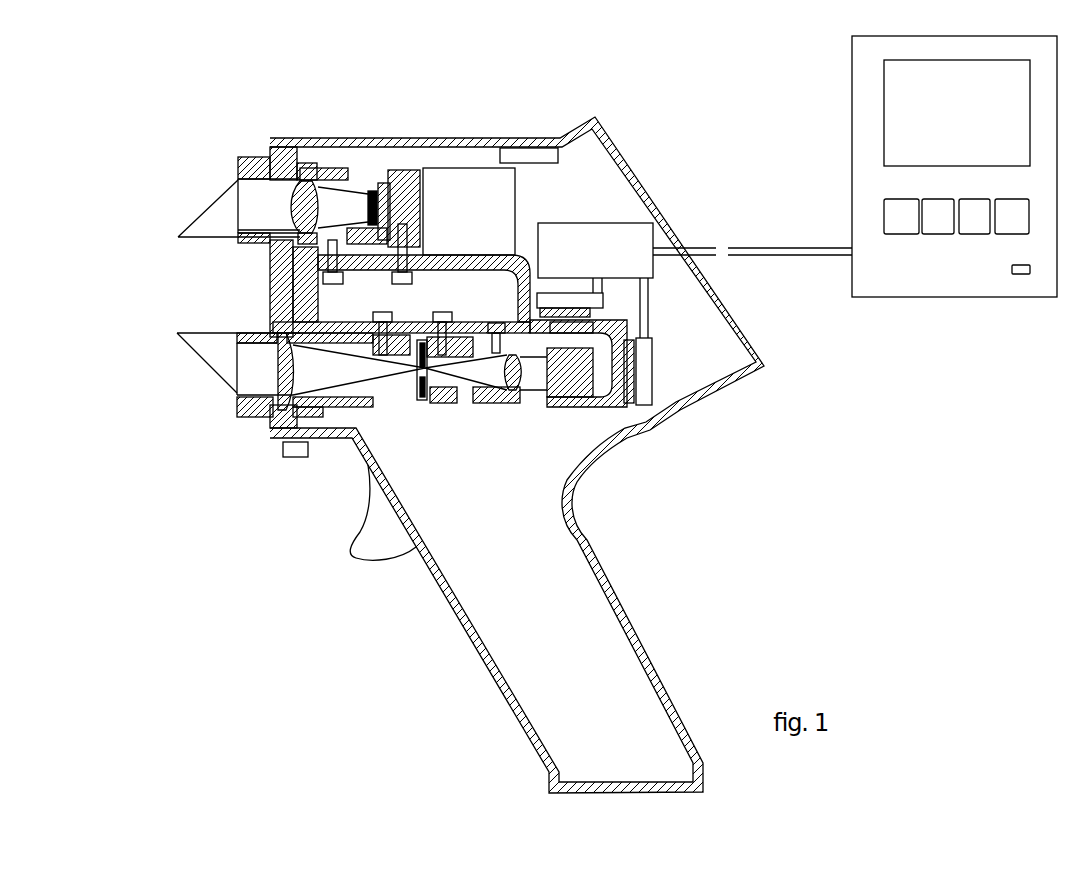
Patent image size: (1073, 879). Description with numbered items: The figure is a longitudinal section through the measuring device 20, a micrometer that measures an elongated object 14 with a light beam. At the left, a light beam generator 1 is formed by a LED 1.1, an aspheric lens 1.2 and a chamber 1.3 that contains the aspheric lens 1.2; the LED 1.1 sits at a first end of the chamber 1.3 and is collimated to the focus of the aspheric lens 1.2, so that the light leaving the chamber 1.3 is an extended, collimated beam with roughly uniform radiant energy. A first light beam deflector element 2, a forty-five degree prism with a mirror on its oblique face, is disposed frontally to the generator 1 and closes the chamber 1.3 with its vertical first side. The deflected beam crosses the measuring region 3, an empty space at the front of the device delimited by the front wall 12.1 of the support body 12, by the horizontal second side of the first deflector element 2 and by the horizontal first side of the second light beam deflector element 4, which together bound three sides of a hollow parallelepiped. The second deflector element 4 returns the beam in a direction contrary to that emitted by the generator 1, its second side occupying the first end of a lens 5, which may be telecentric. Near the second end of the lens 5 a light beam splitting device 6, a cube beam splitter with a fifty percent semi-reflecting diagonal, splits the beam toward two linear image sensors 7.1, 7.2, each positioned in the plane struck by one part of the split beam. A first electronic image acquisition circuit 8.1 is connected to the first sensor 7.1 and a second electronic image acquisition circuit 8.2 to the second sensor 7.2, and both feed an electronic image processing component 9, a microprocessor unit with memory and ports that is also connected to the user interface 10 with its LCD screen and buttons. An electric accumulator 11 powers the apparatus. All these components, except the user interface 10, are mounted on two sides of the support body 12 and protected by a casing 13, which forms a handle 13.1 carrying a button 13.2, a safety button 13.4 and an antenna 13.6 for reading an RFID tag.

The light beam generator 1 is at (323, 146).
The LED 1.1 is at (371, 189).
The aspheric lens 1.2 is at (306, 188).
The chamber 1.3 is at (265, 209).
The first light beam deflector element 2 is at (212, 217).
The measuring region 3 is at (198, 320).
The second light beam deflector element 4 is at (210, 358).
The lens 5 is at (306, 377).
The light beam splitting device 6 is at (572, 385).
The first linear image sensor 7.1 is at (634, 408).
The second linear image sensor 7.2 is at (628, 317).
The first electronic image acquisition circuit 8.1 is at (646, 380).
The second electronic image acquisition circuit 8.2 is at (595, 300).
The electronic image processing component 9 is at (627, 240).
The user interface 10 is at (868, 106).
The electric accumulator 11 is at (452, 195).
The support body 12 is at (514, 260).
The front wall 12.1 is at (266, 272).
The casing 13 is at (423, 141).
The handle 13.1 is at (585, 609).
The button 13.2 is at (380, 540).
The safety button 13.4 is at (295, 452).
The antenna 13.6 is at (513, 153).
The elongated object 14 is at (206, 288).
The measuring device 20 is at (143, 116).